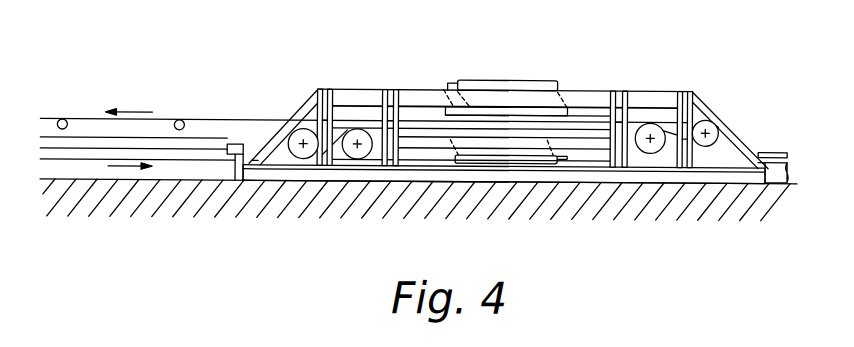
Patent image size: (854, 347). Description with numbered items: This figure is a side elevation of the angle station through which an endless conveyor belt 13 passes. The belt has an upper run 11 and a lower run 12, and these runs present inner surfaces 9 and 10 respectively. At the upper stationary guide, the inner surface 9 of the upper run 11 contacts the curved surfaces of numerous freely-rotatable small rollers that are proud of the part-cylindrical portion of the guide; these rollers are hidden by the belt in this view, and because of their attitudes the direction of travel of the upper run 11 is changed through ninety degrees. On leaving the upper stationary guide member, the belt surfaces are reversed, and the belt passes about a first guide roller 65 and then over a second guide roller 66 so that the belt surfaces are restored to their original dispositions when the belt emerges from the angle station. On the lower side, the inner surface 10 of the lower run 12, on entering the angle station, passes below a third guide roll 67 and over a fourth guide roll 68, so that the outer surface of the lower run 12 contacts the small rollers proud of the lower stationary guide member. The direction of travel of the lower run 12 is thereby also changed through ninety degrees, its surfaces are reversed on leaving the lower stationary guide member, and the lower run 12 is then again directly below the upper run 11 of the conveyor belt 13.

The inner surface of the upper run 9 is at (655, 105).
The inner surface of the lower run 10 is at (180, 148).
The upper run 11 is at (215, 118).
The lower run 12 is at (86, 160).
The endless conveyor belt 13 is at (506, 70).
The first guide roller 65 is at (708, 142).
The second guide roller 66 is at (652, 149).
The third guide roll 67 is at (300, 157).
The fourth guide roll 68 is at (362, 153).